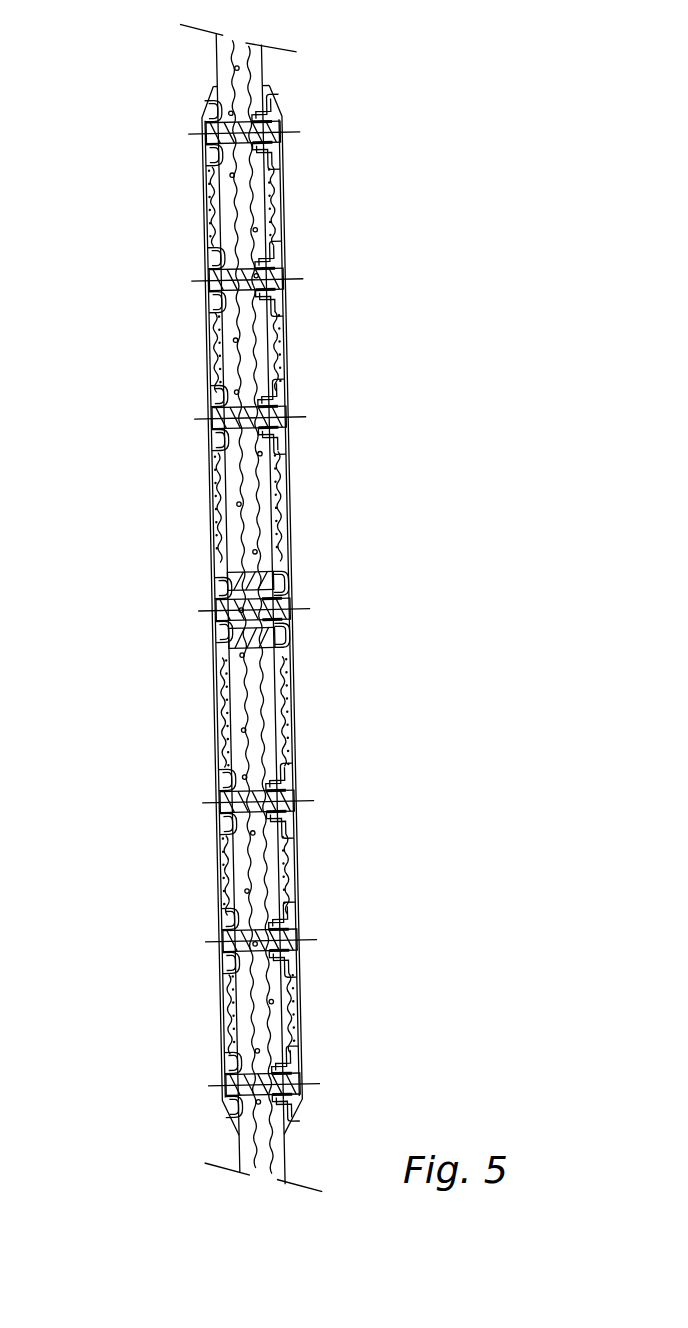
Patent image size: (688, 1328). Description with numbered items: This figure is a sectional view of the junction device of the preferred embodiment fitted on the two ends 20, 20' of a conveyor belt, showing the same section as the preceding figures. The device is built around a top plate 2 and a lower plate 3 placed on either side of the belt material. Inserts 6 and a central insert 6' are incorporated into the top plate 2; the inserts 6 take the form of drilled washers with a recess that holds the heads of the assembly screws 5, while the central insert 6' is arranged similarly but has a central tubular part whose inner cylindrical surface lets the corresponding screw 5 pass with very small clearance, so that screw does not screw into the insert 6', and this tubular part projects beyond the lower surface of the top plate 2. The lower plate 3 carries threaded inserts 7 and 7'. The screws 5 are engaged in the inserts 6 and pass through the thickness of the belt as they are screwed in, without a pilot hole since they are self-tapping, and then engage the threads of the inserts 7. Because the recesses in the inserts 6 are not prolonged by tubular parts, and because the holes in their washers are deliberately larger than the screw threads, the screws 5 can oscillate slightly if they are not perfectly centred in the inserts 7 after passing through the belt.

The top plate 2 is at (212, 505).
The lower plate 3 is at (283, 495).
The assembly screws 5 is at (213, 130).
The inserts 6 is at (150, 624).
The central insert 6' is at (173, 618).
The threaded inserts 7 is at (342, 607).
The threaded insert 7' is at (334, 600).
The end of conveyor belt 20 is at (298, 598).
The end of conveyor belt 20' is at (215, 1174).